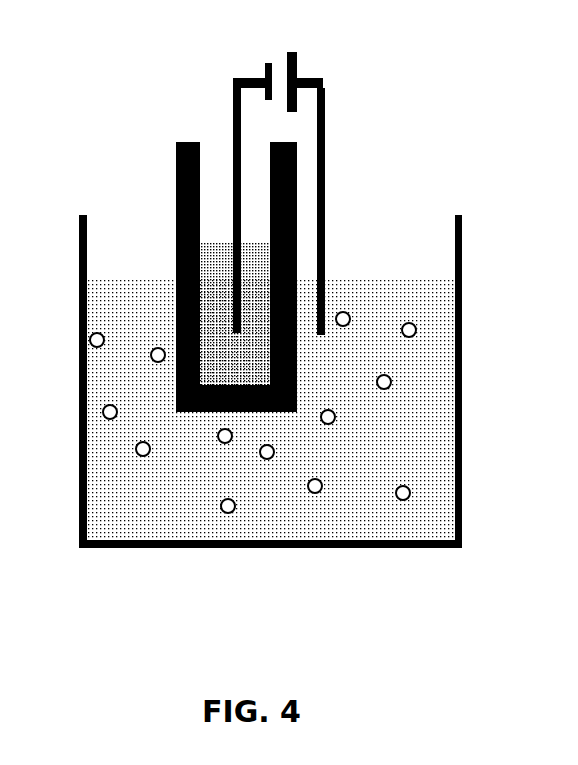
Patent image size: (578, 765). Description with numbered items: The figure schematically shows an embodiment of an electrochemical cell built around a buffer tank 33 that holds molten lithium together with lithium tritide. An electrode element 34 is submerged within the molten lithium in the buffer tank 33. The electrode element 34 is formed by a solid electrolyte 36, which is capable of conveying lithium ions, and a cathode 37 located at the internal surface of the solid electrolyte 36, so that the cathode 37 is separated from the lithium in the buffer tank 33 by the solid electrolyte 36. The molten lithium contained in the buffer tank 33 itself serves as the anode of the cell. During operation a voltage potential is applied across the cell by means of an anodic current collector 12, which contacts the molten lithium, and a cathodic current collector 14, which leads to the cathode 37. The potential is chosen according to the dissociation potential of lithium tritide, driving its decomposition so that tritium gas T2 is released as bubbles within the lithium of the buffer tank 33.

The anodic current collector 12 is at (325, 166).
The cathodic current collector 14 is at (233, 110).
The buffer tank 33 is at (462, 441).
The electrode element 34 is at (190, 245).
The solid electrolyte 36 is at (176, 243).
The cathode 37 is at (176, 165).
The tritium gas bubbles T2 is at (150, 353).